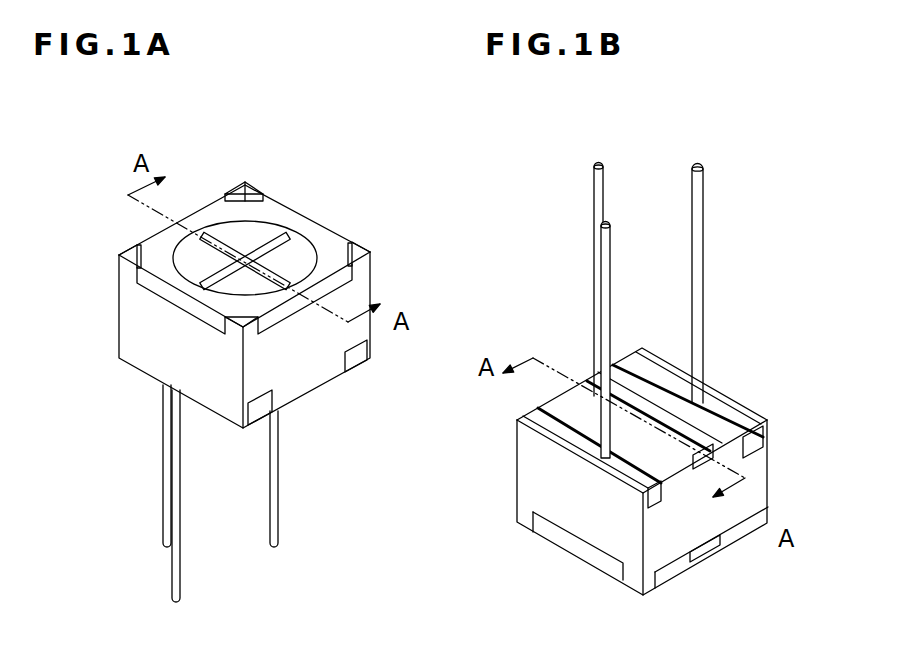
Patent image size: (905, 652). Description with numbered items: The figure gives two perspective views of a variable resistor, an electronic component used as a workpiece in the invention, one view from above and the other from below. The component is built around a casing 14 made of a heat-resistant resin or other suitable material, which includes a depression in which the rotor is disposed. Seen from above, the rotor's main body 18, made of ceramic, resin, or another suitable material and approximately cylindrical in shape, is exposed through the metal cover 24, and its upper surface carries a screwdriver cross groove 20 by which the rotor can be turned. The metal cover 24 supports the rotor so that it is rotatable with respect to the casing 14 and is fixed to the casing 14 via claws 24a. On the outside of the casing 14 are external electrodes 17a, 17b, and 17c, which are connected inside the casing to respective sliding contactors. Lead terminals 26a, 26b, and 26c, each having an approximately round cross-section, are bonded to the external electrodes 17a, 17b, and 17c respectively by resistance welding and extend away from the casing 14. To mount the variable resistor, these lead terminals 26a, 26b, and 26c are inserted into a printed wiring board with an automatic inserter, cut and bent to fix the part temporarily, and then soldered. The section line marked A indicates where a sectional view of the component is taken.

In FIG. 1A, the casing 14 is at (140, 323).
In FIG. 1B, the casing 14 is at (755, 467).
In FIG. 1A, the external electrode 17a is at (260, 408).
In FIG. 1B, the external electrode 17a is at (737, 415).
In FIG. 1B, the external electrode 17b is at (650, 420).
In FIG. 1A, the external electrode 17c is at (357, 360).
In FIG. 1B, the external electrode 17c is at (590, 455).
In FIG. 1A, the main body of the rotor 18 is at (292, 252).
In FIG. 1A, the screwdriver cross groove 20 is at (257, 250).
In FIG. 1A, the metal cover 24 is at (160, 247).
In FIG. 1B, the metal cover 24 is at (585, 550).
In FIG. 1A, the claws 24a is at (238, 182).
In FIG. 1A, the lead terminal 26a is at (178, 586).
In FIG. 1B, the lead terminal 26a is at (698, 228).
In FIG. 1A, the lead terminal 26b is at (165, 530).
In FIG. 1B, the lead terminal 26b is at (598, 207).
In FIG. 1A, the lead terminal 26c is at (275, 537).
In FIG. 1B, the lead terminal 26c is at (605, 313).